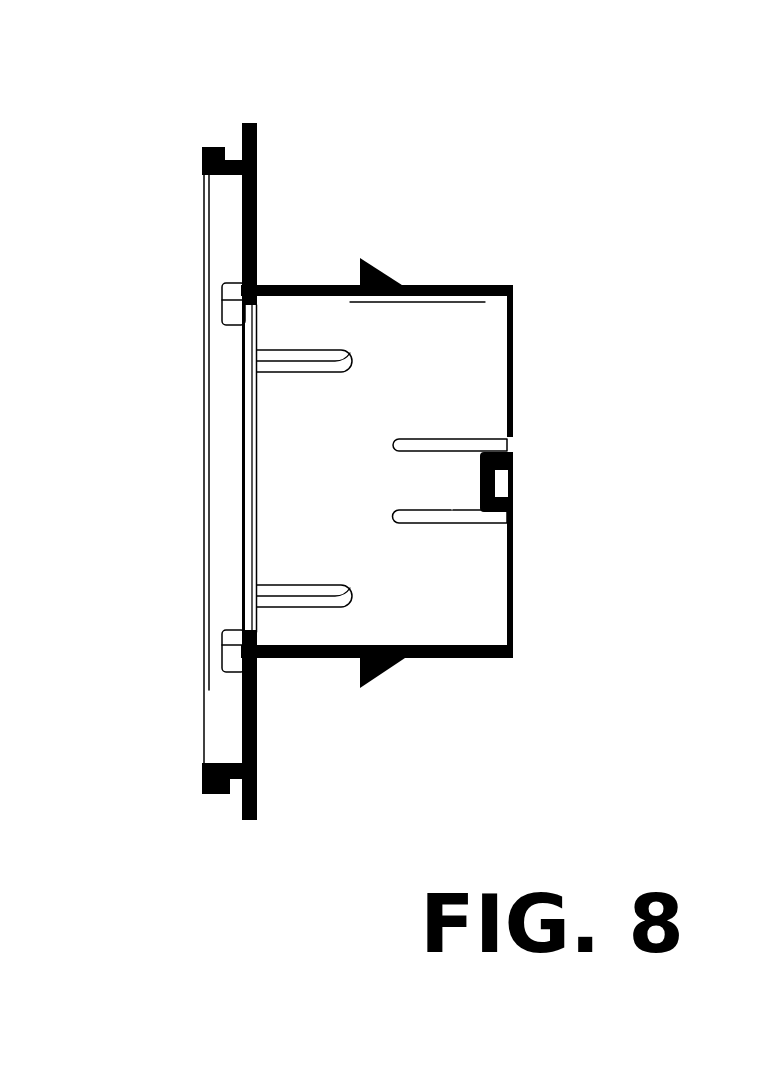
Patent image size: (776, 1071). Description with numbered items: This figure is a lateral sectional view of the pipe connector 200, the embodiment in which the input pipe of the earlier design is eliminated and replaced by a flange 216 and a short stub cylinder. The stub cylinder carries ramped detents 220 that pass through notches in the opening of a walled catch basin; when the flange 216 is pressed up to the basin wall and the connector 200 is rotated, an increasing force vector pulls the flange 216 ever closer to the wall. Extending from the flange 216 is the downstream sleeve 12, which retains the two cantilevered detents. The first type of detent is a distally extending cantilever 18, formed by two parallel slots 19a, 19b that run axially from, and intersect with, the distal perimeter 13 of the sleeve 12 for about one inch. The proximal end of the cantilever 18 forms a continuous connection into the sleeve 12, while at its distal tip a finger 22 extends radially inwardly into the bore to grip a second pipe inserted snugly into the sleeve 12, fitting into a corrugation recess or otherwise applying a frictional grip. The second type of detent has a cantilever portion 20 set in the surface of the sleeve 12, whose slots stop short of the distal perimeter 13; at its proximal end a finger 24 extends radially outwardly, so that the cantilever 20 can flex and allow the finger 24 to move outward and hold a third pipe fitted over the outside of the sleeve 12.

The connector 200 is at (598, 137).
The flange 216 is at (257, 187).
The ramped detents 220 is at (210, 157).
The sleeve 12 is at (445, 480).
The cantilever portion 20 is at (437, 285).
The distal perimeter 13 is at (513, 635).
The finger 24 is at (365, 260).
The parallel slot 19a is at (478, 443).
The parallel slot 19b is at (508, 522).
The finger 22 is at (505, 457).
The cantilever 18 is at (452, 493).